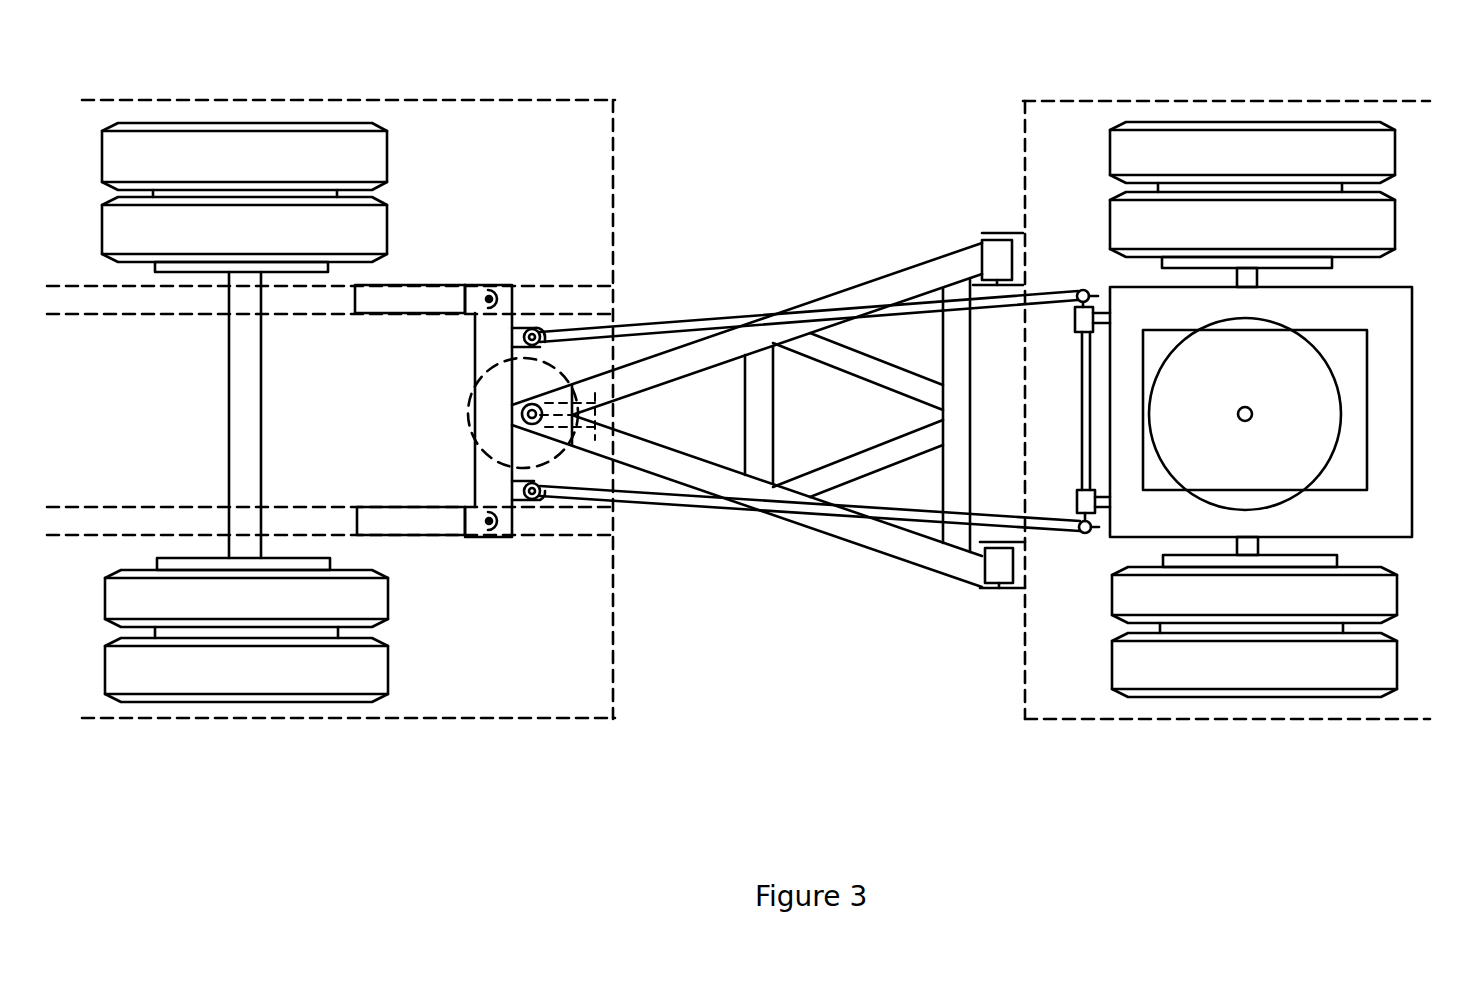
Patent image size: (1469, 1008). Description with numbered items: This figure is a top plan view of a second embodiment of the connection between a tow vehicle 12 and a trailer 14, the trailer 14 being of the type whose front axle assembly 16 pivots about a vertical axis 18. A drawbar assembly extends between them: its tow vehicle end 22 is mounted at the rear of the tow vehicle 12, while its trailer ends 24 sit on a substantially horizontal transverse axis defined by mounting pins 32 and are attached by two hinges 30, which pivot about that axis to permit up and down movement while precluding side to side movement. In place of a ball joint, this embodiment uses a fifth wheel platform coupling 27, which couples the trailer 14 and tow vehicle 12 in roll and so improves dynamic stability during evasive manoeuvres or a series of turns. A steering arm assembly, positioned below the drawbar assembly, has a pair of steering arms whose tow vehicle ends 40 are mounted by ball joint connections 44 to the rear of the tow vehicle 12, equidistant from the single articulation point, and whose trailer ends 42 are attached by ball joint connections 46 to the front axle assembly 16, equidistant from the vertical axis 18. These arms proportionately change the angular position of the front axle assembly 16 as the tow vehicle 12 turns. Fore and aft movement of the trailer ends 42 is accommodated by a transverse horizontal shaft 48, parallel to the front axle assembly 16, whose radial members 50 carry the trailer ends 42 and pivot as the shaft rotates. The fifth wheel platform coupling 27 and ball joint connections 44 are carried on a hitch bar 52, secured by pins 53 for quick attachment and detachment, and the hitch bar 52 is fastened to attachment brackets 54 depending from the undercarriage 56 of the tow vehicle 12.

The tow vehicle 12 is at (433, 705).
The trailer 14 is at (1093, 702).
The front axle assembly 16 is at (1248, 273).
The vertical axis 18 is at (1251, 408).
The tow vehicle end 22 is at (555, 415).
The trailer end 24 is at (948, 267).
The fifth wheel platform coupling 27 is at (513, 407).
The hinges 30 is at (990, 262).
The mounting pins 32 is at (997, 250).
The tow vehicle ends 40 is at (610, 323).
The trailer ends 42 is at (1063, 297).
The ball joint connections 44 is at (536, 329).
The ball joint connections 46 is at (1081, 289).
The transverse horizontal shaft 48 is at (1080, 432).
The radial members 50 is at (280, 302).
The hitch bar 52 is at (503, 490).
The pins 53 is at (488, 300).
The attachment brackets 54 is at (408, 300).
The undercarriage 56 is at (470, 420).